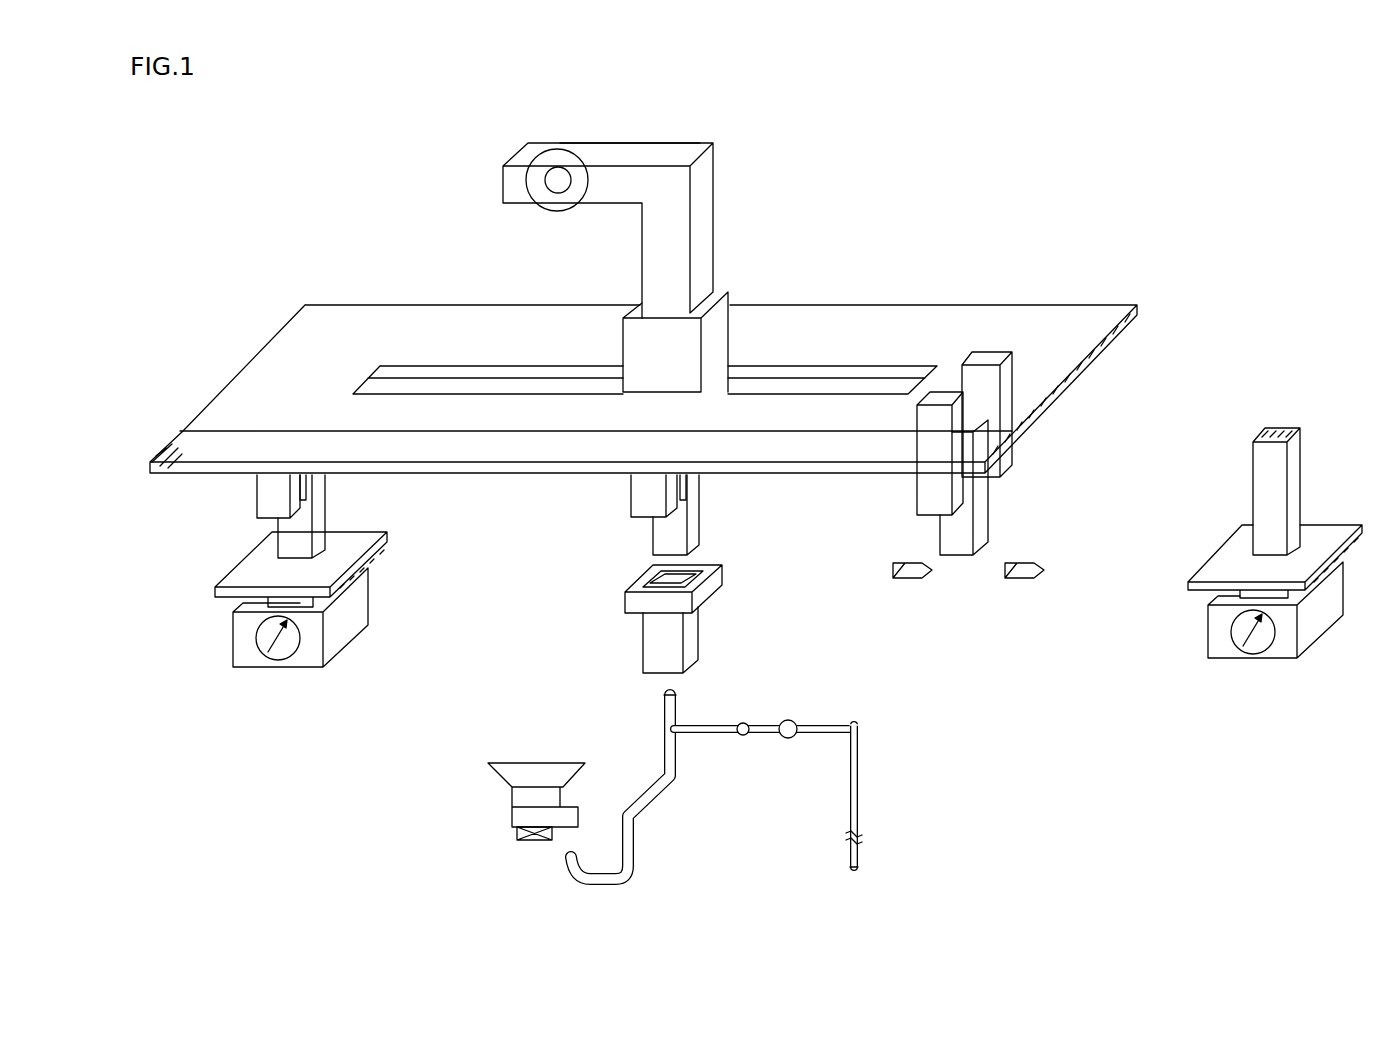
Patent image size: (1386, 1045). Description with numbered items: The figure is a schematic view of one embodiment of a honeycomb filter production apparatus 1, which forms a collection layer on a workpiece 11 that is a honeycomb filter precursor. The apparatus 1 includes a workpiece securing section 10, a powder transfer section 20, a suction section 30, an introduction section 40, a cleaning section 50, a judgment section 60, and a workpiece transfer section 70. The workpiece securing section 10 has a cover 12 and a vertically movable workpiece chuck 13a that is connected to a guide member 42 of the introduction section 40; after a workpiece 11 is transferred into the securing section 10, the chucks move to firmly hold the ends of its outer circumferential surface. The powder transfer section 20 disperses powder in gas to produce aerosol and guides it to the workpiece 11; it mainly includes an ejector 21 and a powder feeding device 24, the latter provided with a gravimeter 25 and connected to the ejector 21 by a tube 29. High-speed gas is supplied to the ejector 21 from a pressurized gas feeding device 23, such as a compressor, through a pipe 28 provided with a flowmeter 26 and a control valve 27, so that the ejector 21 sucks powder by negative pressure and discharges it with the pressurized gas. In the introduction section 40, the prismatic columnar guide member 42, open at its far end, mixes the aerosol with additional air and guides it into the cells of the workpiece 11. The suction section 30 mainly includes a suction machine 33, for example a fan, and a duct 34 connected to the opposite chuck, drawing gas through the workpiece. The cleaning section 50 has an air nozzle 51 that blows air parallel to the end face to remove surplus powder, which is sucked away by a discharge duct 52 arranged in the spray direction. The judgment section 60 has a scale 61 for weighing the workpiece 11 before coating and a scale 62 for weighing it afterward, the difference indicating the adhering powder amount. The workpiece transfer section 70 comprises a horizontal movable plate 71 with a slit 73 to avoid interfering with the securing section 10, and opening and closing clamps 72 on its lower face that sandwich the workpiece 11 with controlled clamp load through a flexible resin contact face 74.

The honeycomb filter production apparatus 1 is at (1064, 231).
The workpiece securing section 10 is at (740, 293).
The workpiece 11 is at (325, 516).
The cover 12 is at (622, 333).
The workpiece chuck 13a is at (625, 597).
The powder transfer section 20 is at (880, 693).
The ejector 21 is at (683, 741).
The pressurized gas feeding device 23 is at (854, 879).
The powder feeding device 24 is at (528, 762).
The gravimeter 25 is at (522, 842).
The flowmeter 26 is at (746, 736).
The control valve 27 is at (790, 739).
The pipe 28 is at (848, 811).
The tube 29 is at (645, 810).
The suction section 30 is at (733, 150).
The suction machine 33 is at (553, 212).
The duct 34 is at (640, 143).
The introduction section 40 is at (742, 585).
The guide member 42 is at (643, 642).
The cleaning section 50 is at (1057, 588).
The air nozzle 51 is at (900, 562).
The discharge duct 52 is at (1026, 562).
The judgment section 60 is at (392, 676).
The scale 61 is at (357, 605).
The scale 62 is at (1208, 633).
The workpiece transfer section 70 is at (527, 430).
The movable plate 71 is at (374, 325).
The opening and closing clamps 72 is at (257, 496).
The slit 73 is at (460, 380).
The resin contact face 74 is at (312, 484).